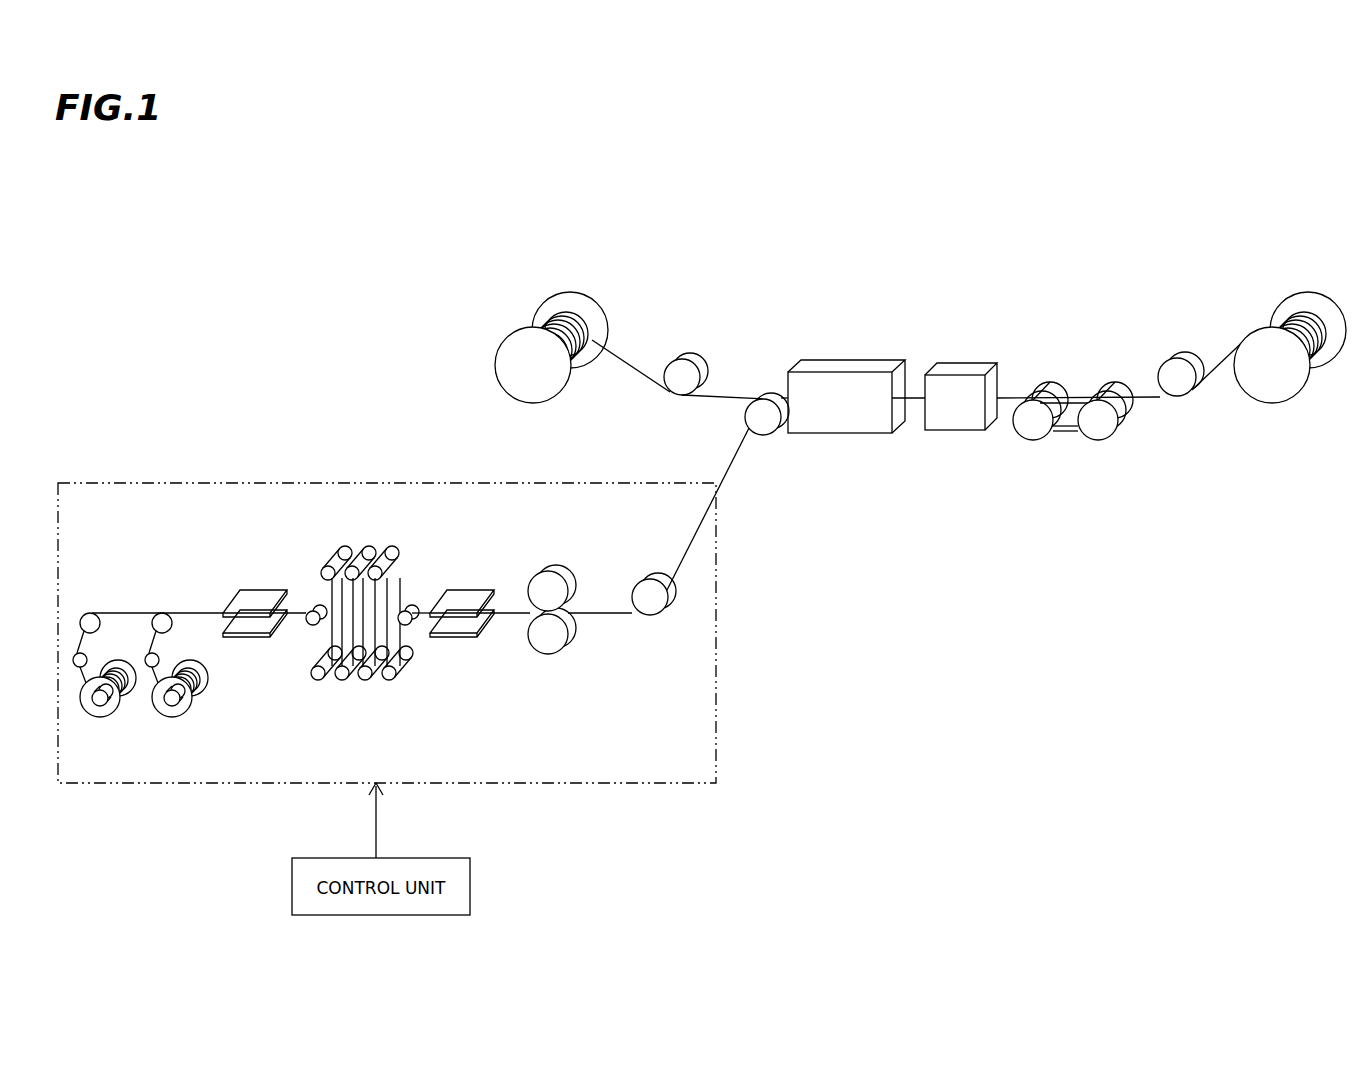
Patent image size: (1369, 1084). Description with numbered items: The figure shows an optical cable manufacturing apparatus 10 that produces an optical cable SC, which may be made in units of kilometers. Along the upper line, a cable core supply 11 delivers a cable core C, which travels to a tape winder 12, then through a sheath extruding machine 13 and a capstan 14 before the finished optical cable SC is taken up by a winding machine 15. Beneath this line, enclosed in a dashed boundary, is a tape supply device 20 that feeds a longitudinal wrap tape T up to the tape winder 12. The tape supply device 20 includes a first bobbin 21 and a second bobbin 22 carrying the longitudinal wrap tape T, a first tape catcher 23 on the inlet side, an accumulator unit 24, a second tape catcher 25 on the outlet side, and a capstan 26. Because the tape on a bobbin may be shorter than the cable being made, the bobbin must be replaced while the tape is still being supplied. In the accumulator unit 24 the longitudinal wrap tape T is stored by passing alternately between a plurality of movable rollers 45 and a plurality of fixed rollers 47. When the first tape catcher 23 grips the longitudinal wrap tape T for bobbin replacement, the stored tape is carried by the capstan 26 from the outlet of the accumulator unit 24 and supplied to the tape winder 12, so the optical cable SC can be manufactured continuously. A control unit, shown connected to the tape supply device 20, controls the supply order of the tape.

The optical cable manufacturing apparatus 10 is at (914, 227).
The cable core supply 11 is at (572, 296).
The cable core C is at (628, 362).
The tape winder 12 is at (847, 360).
The sheath extruding machine 13 is at (967, 364).
The capstan 14 is at (1078, 375).
The optical cable SC is at (1222, 356).
The winding machine 15 is at (1310, 300).
The tape supply device 20 is at (345, 482).
The first bobbin 21 is at (101, 716).
The second bobbin 22 is at (173, 716).
The first tape catcher 23 is at (245, 638).
The accumulator unit 24 is at (368, 690).
The movable rollers 45 is at (326, 566).
The fixed rollers 47 is at (318, 682).
The second tape catcher 25 is at (452, 638).
The capstan 26 is at (554, 654).
The longitudinal wrap tape T is at (727, 461).